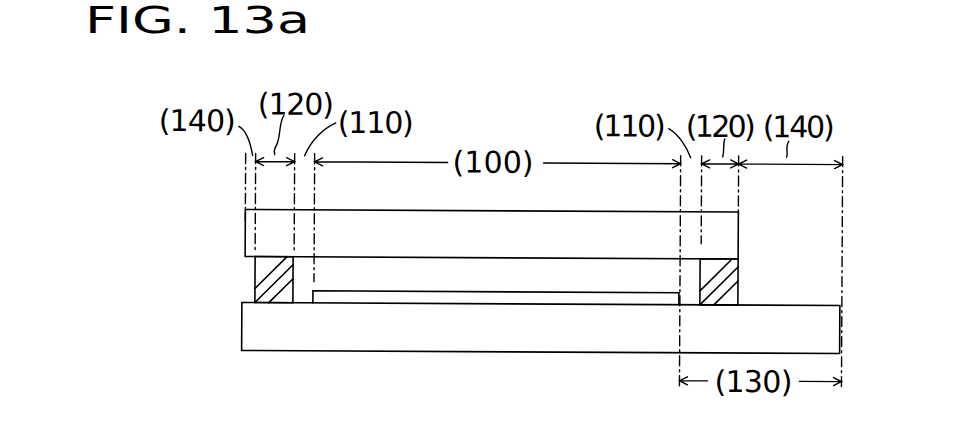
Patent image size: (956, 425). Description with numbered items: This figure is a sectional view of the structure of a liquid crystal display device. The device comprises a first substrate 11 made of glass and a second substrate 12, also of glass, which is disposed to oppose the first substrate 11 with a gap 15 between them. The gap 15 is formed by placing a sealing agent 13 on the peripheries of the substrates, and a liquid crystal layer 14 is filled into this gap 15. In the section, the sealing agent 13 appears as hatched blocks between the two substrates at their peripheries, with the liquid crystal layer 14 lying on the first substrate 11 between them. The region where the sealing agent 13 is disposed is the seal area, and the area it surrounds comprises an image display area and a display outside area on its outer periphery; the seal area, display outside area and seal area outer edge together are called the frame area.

The first substrate 11 is at (832, 333).
The second substrate 12 is at (732, 240).
The sealing agent 13 is at (739, 278).
The liquid crystal layer 14 is at (358, 280).
The gap 15 is at (300, 273).